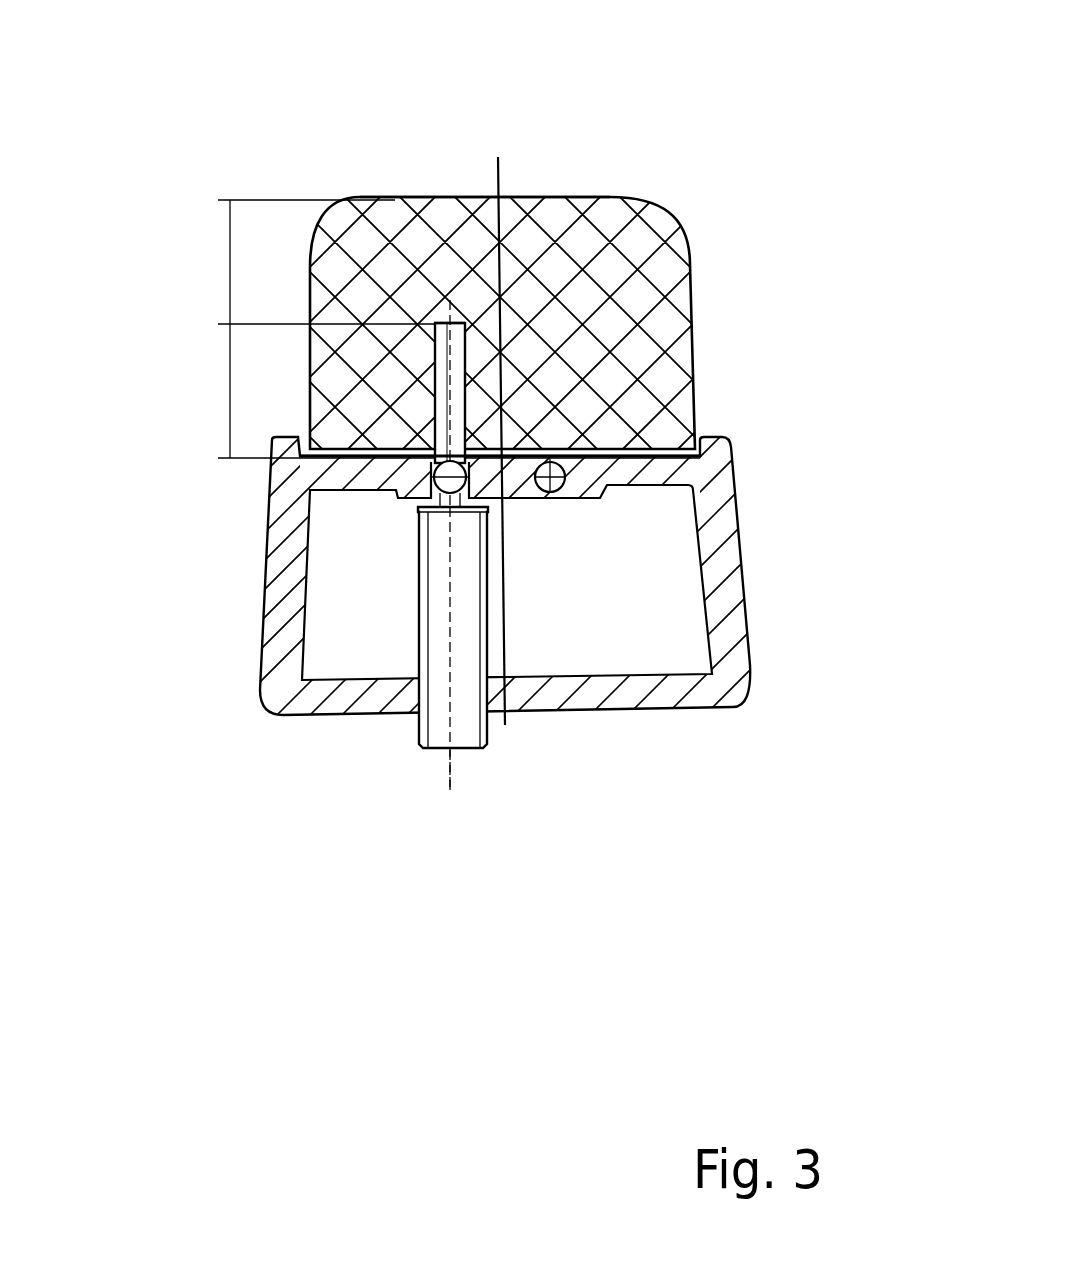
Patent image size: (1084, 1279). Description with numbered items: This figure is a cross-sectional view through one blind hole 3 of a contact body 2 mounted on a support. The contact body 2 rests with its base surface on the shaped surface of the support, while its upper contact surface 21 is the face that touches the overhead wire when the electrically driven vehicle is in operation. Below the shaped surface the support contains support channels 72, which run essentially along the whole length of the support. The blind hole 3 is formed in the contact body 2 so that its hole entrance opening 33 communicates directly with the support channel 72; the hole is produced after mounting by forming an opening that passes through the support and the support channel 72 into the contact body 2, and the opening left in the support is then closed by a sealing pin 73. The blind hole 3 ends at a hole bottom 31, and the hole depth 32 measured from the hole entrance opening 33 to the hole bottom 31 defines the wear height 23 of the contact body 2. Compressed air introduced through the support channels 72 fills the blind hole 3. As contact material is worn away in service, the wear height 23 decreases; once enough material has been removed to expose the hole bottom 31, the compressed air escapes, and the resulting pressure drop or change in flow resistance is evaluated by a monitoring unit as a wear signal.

The contact body 2 is at (600, 265).
The contact surface 21 is at (588, 196).
The wear height 23 is at (220, 260).
The hole depth 32 is at (222, 393).
The blind hole 3 is at (448, 396).
The hole bottom 31 is at (447, 318).
The hole entrance opening 33 is at (395, 486).
The support channel 72 is at (575, 452).
The lower pin / bushing 73 is at (453, 660).